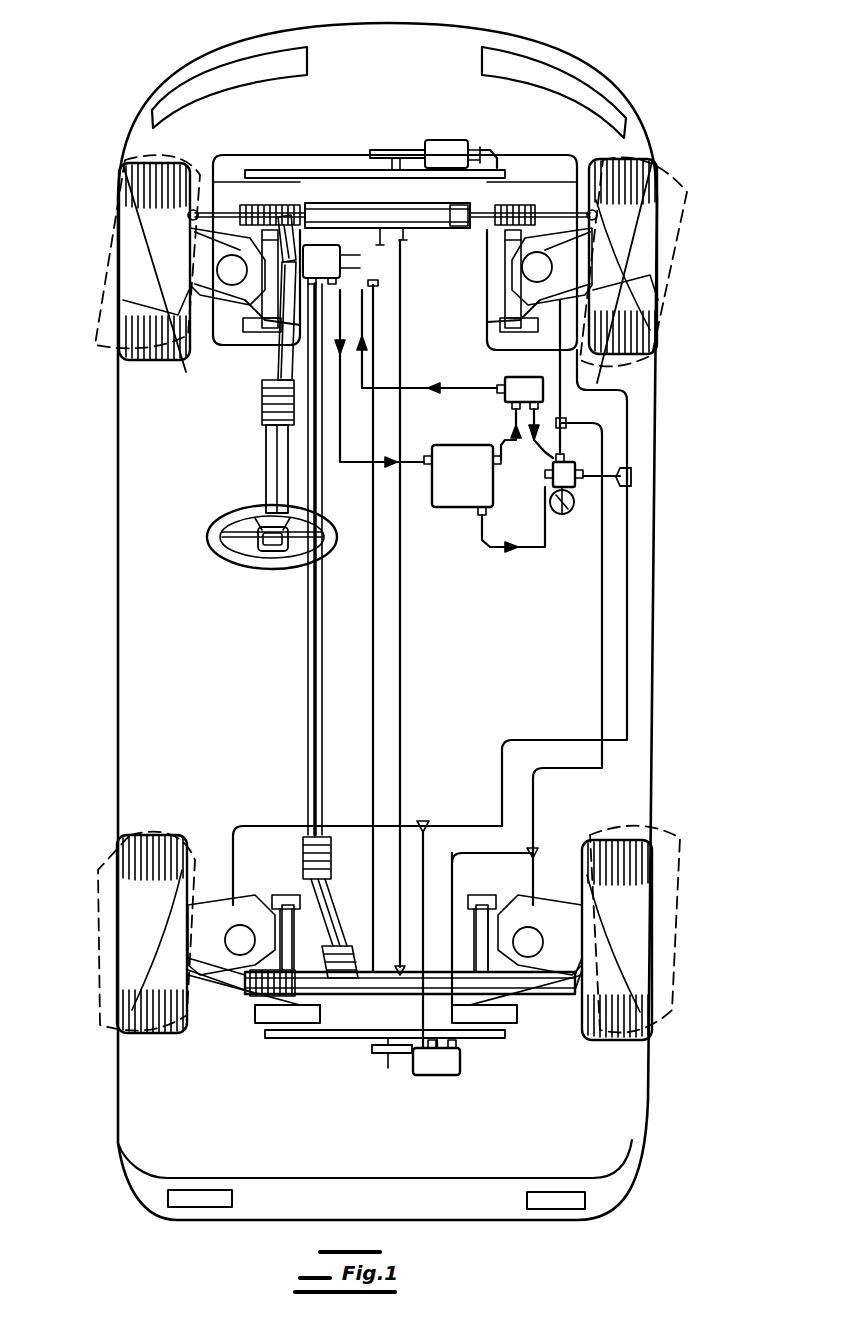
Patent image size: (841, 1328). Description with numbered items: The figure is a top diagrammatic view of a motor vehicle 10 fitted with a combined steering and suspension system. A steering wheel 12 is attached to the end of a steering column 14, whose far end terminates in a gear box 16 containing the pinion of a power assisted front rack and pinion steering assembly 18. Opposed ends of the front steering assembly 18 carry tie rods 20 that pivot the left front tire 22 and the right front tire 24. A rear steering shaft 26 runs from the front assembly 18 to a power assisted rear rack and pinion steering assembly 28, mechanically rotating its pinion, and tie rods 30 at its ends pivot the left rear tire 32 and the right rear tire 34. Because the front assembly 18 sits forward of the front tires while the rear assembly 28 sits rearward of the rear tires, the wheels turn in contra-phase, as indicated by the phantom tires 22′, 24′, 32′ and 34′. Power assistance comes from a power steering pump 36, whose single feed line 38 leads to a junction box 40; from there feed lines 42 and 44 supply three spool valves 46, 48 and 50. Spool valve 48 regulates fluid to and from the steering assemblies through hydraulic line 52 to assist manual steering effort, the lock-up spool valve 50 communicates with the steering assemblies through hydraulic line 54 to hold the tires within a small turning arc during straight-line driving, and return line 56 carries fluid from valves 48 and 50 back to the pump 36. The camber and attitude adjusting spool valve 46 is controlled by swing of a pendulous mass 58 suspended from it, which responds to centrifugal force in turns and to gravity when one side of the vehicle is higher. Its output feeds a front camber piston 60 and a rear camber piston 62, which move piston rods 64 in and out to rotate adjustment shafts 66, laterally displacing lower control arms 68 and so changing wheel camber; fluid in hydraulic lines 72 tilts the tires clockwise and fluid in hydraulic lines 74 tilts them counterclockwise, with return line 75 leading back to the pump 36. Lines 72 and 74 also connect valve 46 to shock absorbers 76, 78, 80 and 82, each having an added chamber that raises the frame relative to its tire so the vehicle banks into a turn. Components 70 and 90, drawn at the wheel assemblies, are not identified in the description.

The motor vehicle 10 is at (148, 62).
The steering wheel 12 is at (238, 560).
The steering column 14 is at (268, 455).
The gear box 16 is at (300, 205).
The front rack and pinion steering assembly 18 is at (450, 232).
The tie rods 20 is at (185, 232).
The left front tire 22 is at (150, 358).
The phantom left front tire 22′ is at (96, 338).
The right front tire 24 is at (618, 162).
The phantom right front tire 24′ is at (690, 190).
The rear steering shaft 26 is at (307, 715).
The rear rack and pinion steering assembly 28 is at (385, 997).
The tie rods 30 is at (195, 1000).
The left rear tire 32 is at (150, 1025).
The phantom left rear tire 32′ is at (100, 868).
The right rear tire 34 is at (640, 1035).
The phantom right rear tire 34′ is at (670, 840).
The power steering pump 36 is at (462, 505).
The feed line 38 is at (510, 415).
The junction box 40 is at (522, 378).
The feed line 42 is at (545, 470).
The feed line 44 is at (413, 388).
The camber and attitude adjusting spool valve 46 is at (600, 462).
The spool valve 48 is at (365, 262).
The lock-up spool valve 50 is at (360, 290).
The hydraulic line 52 is at (372, 600).
The hydraulic line 54 is at (402, 640).
The return line 56 is at (366, 462).
The pendulous mass 58 is at (560, 514).
The front camber piston 60 is at (440, 145).
The rear camber piston 62 is at (462, 1078).
The piston rods 64 is at (410, 150).
The adjustment shafts 66 is at (262, 328).
The lower control arms 68 is at (240, 192).
The wheel knuckle 70 is at (205, 290).
The hydraulic lines 72 is at (495, 168).
The hydraulic lines 74 is at (628, 415).
The return line 75 is at (498, 550).
The shock absorber 76 is at (225, 320).
The shock absorber 78 is at (533, 267).
The shock absorber 80 is at (255, 935).
The shock absorber 82 is at (538, 920).
The stabilizer bar 90 is at (300, 170).